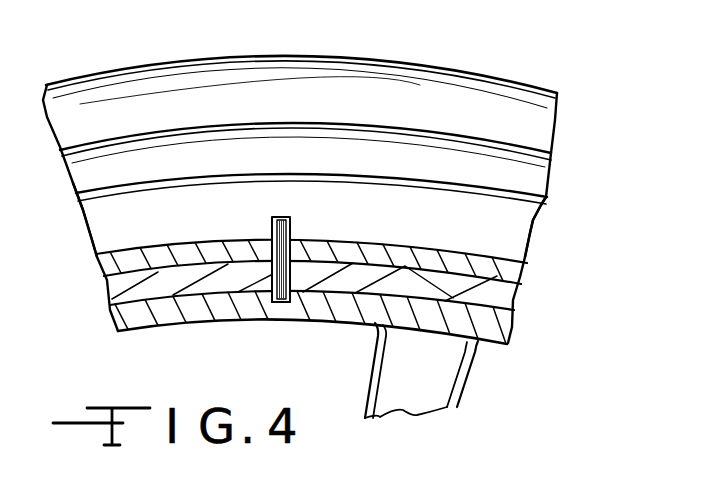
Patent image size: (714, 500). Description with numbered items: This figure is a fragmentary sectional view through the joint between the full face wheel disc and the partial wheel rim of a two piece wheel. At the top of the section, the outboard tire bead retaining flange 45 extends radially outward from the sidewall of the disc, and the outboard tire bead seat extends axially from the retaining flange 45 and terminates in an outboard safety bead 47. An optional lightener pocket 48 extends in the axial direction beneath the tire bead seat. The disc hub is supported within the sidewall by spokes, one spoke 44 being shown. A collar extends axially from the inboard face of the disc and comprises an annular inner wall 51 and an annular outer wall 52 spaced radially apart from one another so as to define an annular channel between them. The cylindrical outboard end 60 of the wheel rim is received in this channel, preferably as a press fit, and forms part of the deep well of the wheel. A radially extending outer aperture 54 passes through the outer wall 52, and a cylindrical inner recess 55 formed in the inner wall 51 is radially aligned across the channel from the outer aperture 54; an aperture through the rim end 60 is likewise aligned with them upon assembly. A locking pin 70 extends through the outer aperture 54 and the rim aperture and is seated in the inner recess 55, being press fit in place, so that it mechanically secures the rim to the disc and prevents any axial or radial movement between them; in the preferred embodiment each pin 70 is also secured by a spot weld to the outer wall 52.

The spoke 44 is at (427, 388).
The outboard tire bead retaining flange 45 is at (483, 107).
The outboard safety bead 47 is at (520, 168).
The lightener pocket 48 is at (448, 230).
The annular inner wall 51 is at (500, 332).
The annular outer wall 52 is at (487, 268).
The outer aperture 54 is at (292, 233).
The inner recess 55 is at (297, 310).
The cylindrical outboard end of wheel rim 60 is at (500, 298).
The locking pin 70 is at (274, 218).